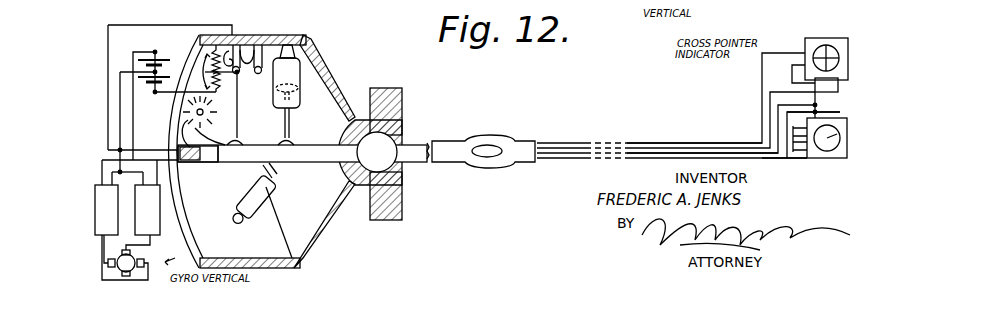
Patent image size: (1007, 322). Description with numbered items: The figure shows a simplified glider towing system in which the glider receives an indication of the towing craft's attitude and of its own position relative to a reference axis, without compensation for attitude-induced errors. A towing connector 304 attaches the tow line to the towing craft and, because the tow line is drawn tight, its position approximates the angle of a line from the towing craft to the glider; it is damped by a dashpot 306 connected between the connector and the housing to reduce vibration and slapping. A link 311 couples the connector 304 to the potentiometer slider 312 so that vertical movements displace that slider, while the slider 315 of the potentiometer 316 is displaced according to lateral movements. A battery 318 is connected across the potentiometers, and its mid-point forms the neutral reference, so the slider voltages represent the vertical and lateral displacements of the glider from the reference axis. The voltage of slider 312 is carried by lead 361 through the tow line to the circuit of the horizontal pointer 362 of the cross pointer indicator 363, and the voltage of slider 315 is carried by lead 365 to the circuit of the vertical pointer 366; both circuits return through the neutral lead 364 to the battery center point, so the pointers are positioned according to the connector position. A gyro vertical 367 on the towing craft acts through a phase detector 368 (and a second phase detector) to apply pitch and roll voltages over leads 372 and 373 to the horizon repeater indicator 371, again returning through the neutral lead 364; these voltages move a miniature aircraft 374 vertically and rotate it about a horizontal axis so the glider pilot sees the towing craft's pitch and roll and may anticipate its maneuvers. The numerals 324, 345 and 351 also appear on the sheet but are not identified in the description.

The towing connector rod 304 is at (452, 145).
The dashpot 306 is at (302, 80).
The link 311 is at (212, 124).
The potentiometer slider 312 is at (243, 44).
The potentiometer slider 315 is at (238, 110).
The potentiometer 316 is at (200, 100).
The battery 318 is at (162, 66).
The lead 324 is at (120, 4).
The lead 345 is at (185, 10).
The lead 351 is at (767, 4).
The lead 361 is at (144, 25).
The horizontal pointer 362 is at (820, 42).
The cross pointer indicator 363 is at (841, 75).
The neutral lead 364 is at (146, 147).
The lead 365 is at (188, 160).
The vertical pointer 366 is at (834, 46).
The gyro vertical 367 is at (160, 192).
The phase detector 368 is at (158, 236).
The horizon repeater indicator 371 is at (845, 158).
The lead 372 is at (785, 162).
The lead 373 is at (750, 153).
The miniature aircraft 374 is at (838, 113).